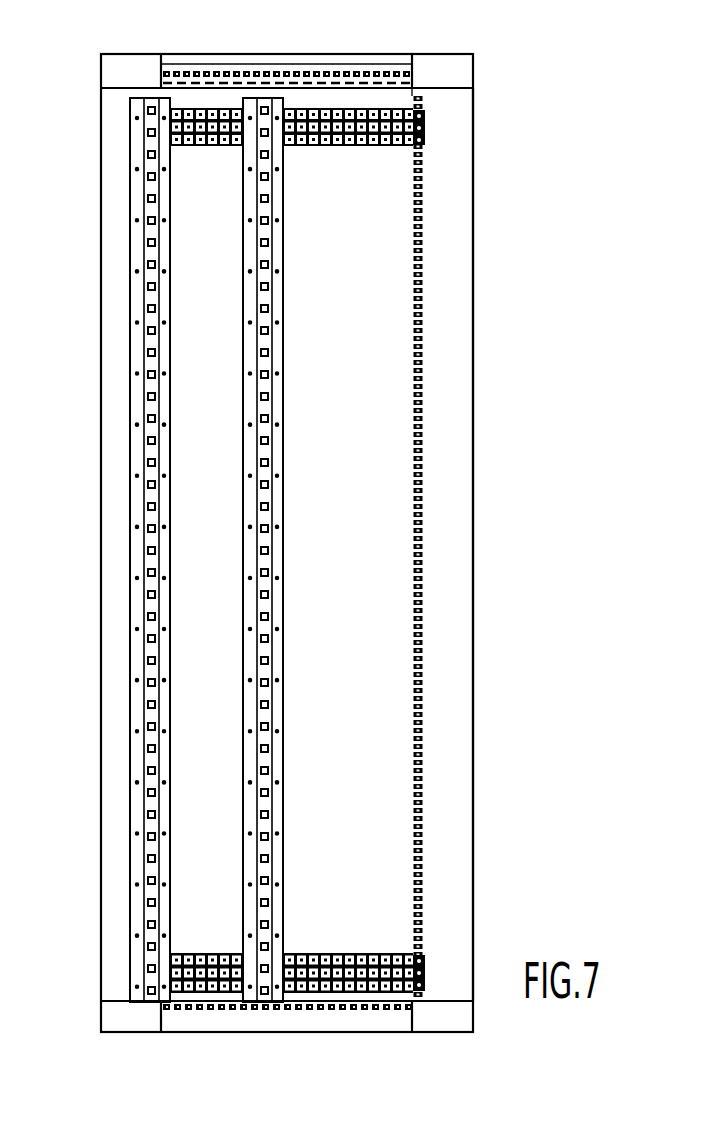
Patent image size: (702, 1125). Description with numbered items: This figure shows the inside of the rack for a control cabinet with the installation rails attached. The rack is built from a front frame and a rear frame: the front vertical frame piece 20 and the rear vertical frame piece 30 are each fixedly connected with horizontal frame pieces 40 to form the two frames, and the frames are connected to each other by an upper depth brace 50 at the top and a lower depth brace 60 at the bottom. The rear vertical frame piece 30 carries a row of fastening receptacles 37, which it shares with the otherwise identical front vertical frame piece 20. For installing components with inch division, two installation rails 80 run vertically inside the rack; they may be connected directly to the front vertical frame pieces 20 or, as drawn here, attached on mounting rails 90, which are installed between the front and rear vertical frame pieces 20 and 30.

The front vertical frame piece 20 is at (115, 470).
The rear vertical frame piece 30 is at (455, 442).
The row of fastening receptacles 37 is at (420, 302).
The horizontal frame piece 40 is at (134, 67).
The upper depth brace 50 is at (282, 54).
The lower depth brace 60 is at (282, 1032).
The installation rail 80 is at (152, 553).
The mounting rail 90 is at (360, 147).